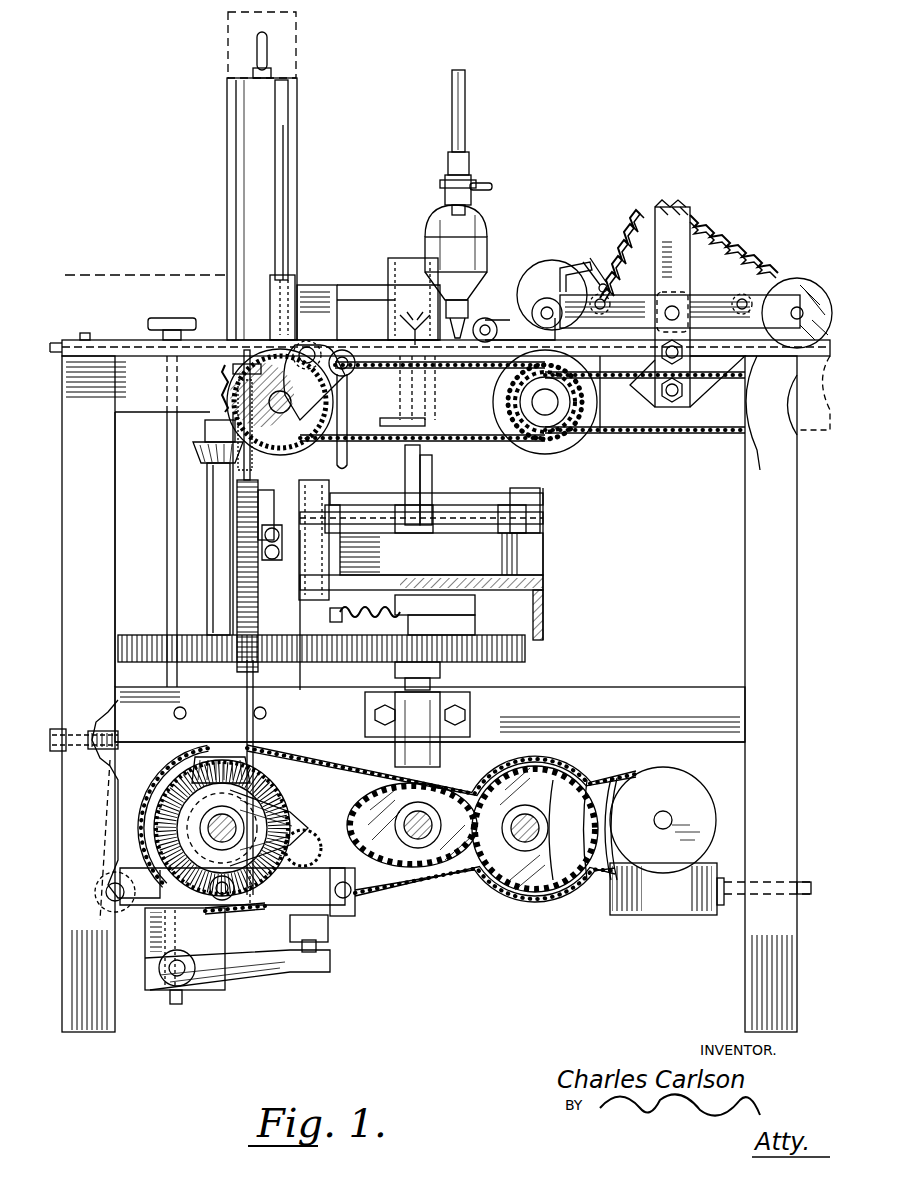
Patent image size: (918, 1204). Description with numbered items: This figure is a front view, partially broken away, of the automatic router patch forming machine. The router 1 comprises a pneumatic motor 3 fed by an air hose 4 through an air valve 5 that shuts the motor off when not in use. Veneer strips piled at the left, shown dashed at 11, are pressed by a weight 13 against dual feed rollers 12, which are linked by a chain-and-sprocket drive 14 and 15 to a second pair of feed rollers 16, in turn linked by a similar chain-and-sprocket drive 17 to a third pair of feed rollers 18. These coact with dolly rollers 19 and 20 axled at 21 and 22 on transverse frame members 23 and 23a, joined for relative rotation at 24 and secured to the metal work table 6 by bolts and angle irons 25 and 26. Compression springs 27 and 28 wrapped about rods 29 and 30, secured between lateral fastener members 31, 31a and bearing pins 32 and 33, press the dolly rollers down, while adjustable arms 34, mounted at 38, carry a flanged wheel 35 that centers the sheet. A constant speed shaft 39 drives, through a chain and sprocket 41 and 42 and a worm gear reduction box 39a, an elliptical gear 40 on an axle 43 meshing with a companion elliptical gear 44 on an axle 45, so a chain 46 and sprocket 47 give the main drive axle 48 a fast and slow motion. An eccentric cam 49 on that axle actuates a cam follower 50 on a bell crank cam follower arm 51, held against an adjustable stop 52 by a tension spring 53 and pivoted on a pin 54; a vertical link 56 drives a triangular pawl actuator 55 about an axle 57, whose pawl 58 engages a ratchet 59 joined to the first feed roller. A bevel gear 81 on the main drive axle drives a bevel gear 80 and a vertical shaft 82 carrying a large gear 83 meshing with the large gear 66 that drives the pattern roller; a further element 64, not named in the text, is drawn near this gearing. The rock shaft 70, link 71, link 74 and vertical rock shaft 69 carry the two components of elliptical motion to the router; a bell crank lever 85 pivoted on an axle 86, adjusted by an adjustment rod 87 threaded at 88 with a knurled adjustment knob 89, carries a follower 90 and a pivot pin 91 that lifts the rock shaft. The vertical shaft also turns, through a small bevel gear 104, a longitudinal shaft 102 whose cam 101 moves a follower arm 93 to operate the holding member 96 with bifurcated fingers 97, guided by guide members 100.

The router 1 is at (512, 252).
The pneumatic motor 3 is at (478, 242).
The air hose 4 is at (465, 125).
The air valve 5 is at (470, 185).
The metal work table 6 is at (203, 342).
The pile of veneer strips 11 is at (100, 275).
The dual feed rollers 12 is at (283, 450).
The weight 13 is at (245, 145).
The chain of chain-and-sprocket drive 14 is at (482, 438).
The sprocket of chain-and-sprocket drive 15 is at (515, 386).
The second pair of feed rollers 16 is at (580, 440).
The chain-and-sprocket drive 17 is at (718, 438).
The third pair of feed rollers 18 is at (800, 450).
The dolly roller 19 is at (530, 295).
The dolly roller 20 is at (800, 280).
The axle of dolly roller 21 is at (550, 313).
The axle of dolly roller 22 is at (791, 315).
The transverse frame member 23 is at (628, 300).
The transverse frame member 23a is at (758, 298).
The pivot joint of frame members 24 is at (665, 313).
The bolts and angle irons 25 is at (660, 384).
The bolts and angle irons 26 is at (650, 395).
The compression spring 27 is at (645, 228).
The compression spring 28 is at (712, 250).
The rod 29 is at (630, 240).
The rod 30 is at (730, 262).
The lateral fastener member 31 is at (658, 210).
The lateral fastener member 31a is at (690, 205).
The bearing pin 32 is at (598, 312).
The bearing pin 33 is at (742, 312).
The adjustable arms 34 is at (495, 325).
The flanged wheel 35 is at (491, 324).
The adjustable mounting of arms 38 is at (592, 258).
The constant speed shaft 39 is at (803, 880).
The worm gear reduction box 39a is at (700, 800).
The elliptical gear 40 is at (560, 840).
The chain 41 is at (614, 778).
The sprocket 42 is at (618, 810).
The axle 43 is at (522, 845).
The companion elliptical gear 44 is at (380, 810).
The axle 45 is at (432, 822).
The chain 46 is at (395, 886).
The sprocket 47 is at (303, 849).
The main drive axle 48 is at (236, 830).
The eccentric cam 49 is at (300, 810).
The cam follower 50 is at (218, 880).
The cam follower arm 51 is at (340, 918).
The adjustable stop 52 is at (110, 735).
The tension spring 53 is at (258, 632).
The pin 54 is at (110, 898).
The pawl actuator 55 is at (318, 340).
The vertical link 56 is at (350, 400).
The axle 57 is at (292, 402).
The pawl 58 is at (240, 372).
The ratchet 59 is at (225, 400).
The spring 64 is at (335, 630).
The large gear 66 is at (528, 658).
The vertical rock shaft 69 is at (410, 258).
The rock shaft 70 is at (322, 285).
The link 71 is at (355, 302).
The link 74 is at (432, 545).
The bevel gear 80 is at (215, 757).
The second bevel gear 81 is at (170, 765).
The vertical shaft 82 is at (215, 586).
The large gear 83 is at (152, 632).
The bell crank lever 85 is at (285, 972).
The axle 86 is at (165, 978).
The adjustment rod 87 is at (165, 440).
The threaded lower extremity 88 is at (172, 1009).
The knurled adjustment knob 89 is at (160, 320).
The follower 90 is at (120, 795).
The pivot pin 91 is at (320, 950).
The follower arm 93 is at (405, 470).
The holding member 96 is at (441, 423).
The bifurcated fingers 97 is at (415, 322).
The guide members 100 is at (400, 424).
The cam 101 is at (432, 475).
The longitudinal shaft 102 is at (455, 498).
The small bevel gear 104 is at (210, 465).